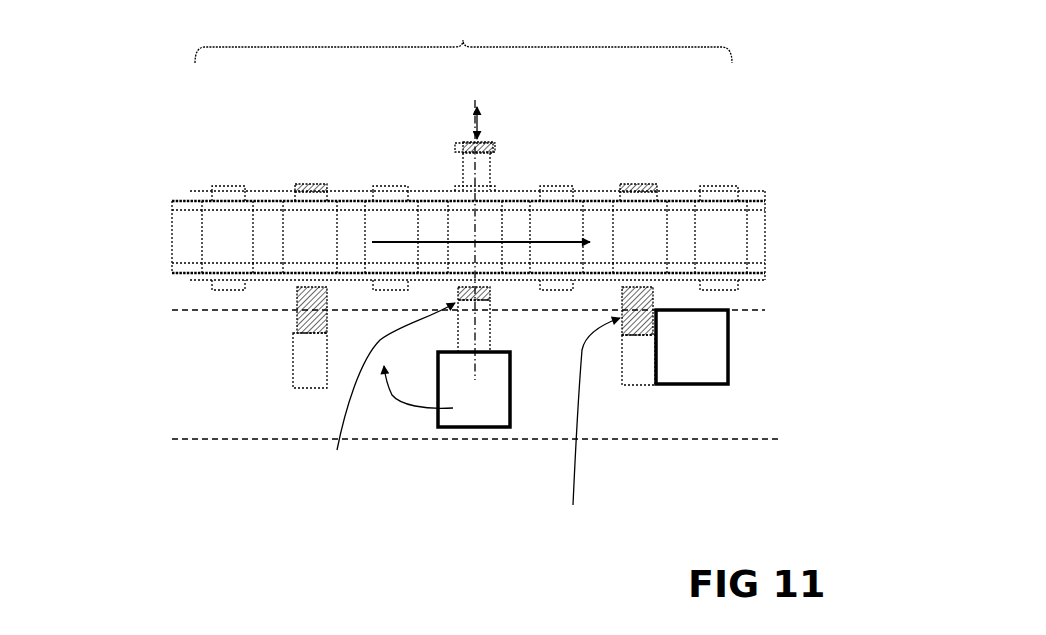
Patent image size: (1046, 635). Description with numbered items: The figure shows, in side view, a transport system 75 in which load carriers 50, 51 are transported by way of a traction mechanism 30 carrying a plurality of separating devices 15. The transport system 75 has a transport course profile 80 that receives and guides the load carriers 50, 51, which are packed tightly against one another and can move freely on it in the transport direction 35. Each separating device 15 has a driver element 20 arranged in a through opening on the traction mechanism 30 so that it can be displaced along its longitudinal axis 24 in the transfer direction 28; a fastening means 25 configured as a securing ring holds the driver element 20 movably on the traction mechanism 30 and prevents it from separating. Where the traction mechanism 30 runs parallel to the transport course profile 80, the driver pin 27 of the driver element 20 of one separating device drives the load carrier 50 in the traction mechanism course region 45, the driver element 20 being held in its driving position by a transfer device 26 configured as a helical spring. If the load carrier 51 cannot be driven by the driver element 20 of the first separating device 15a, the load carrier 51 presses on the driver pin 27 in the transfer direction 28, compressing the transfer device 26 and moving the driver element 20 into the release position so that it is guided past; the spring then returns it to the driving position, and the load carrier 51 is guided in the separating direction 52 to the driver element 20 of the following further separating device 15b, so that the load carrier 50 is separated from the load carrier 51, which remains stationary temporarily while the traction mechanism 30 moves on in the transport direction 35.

The transport system 75 is at (138, 90).
The traction mechanism course region 45 is at (463, 40).
The first separating device 15a is at (413, 130).
The transfer direction 28 is at (470, 115).
The longitudinal axis 24 is at (488, 152).
The fastening means 25 is at (290, 186).
The driver element 20 is at (488, 154).
The transport direction 35 is at (559, 241).
The traction mechanism 30 is at (177, 174).
The further separating device 15b is at (307, 409).
The transfer device 26 is at (337, 450).
The separating direction 52 is at (393, 398).
The load carrier 51 is at (493, 413).
The driver pin 27 is at (482, 333).
The separating device 15 is at (647, 402).
The load carrier 50 is at (717, 367).
The transport course profile 80 is at (197, 441).